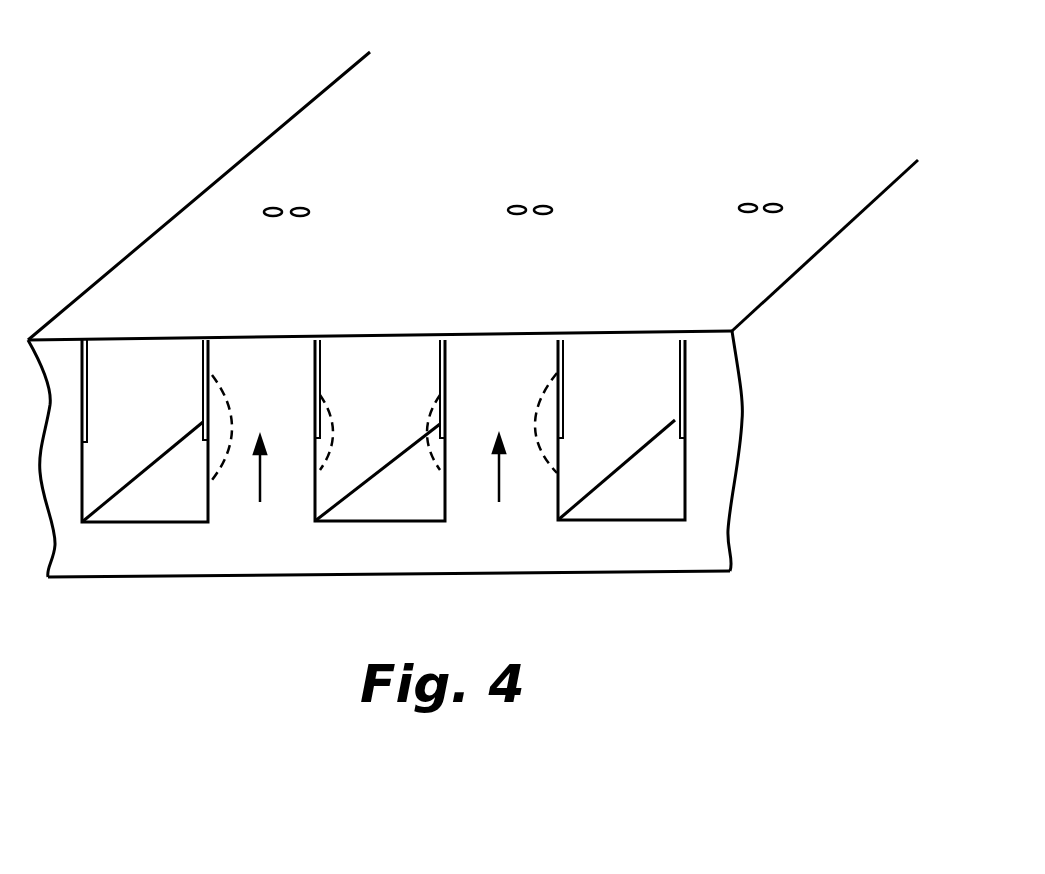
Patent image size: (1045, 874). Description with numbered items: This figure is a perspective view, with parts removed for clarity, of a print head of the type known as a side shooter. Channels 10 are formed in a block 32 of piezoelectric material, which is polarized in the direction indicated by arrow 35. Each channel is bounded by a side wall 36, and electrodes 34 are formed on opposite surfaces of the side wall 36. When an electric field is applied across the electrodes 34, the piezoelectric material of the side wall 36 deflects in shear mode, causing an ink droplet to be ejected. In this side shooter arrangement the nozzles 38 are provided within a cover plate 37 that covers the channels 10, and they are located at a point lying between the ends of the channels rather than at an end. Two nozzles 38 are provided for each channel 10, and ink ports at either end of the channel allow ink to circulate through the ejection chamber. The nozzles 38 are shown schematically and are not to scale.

The channel 10 is at (136, 504).
The block 32 is at (593, 559).
The electrodes 34 is at (200, 378).
The arrow 35 is at (260, 502).
The side wall 36 is at (244, 390).
The cover plate 37 is at (659, 148).
The nozzles 38 is at (271, 208).